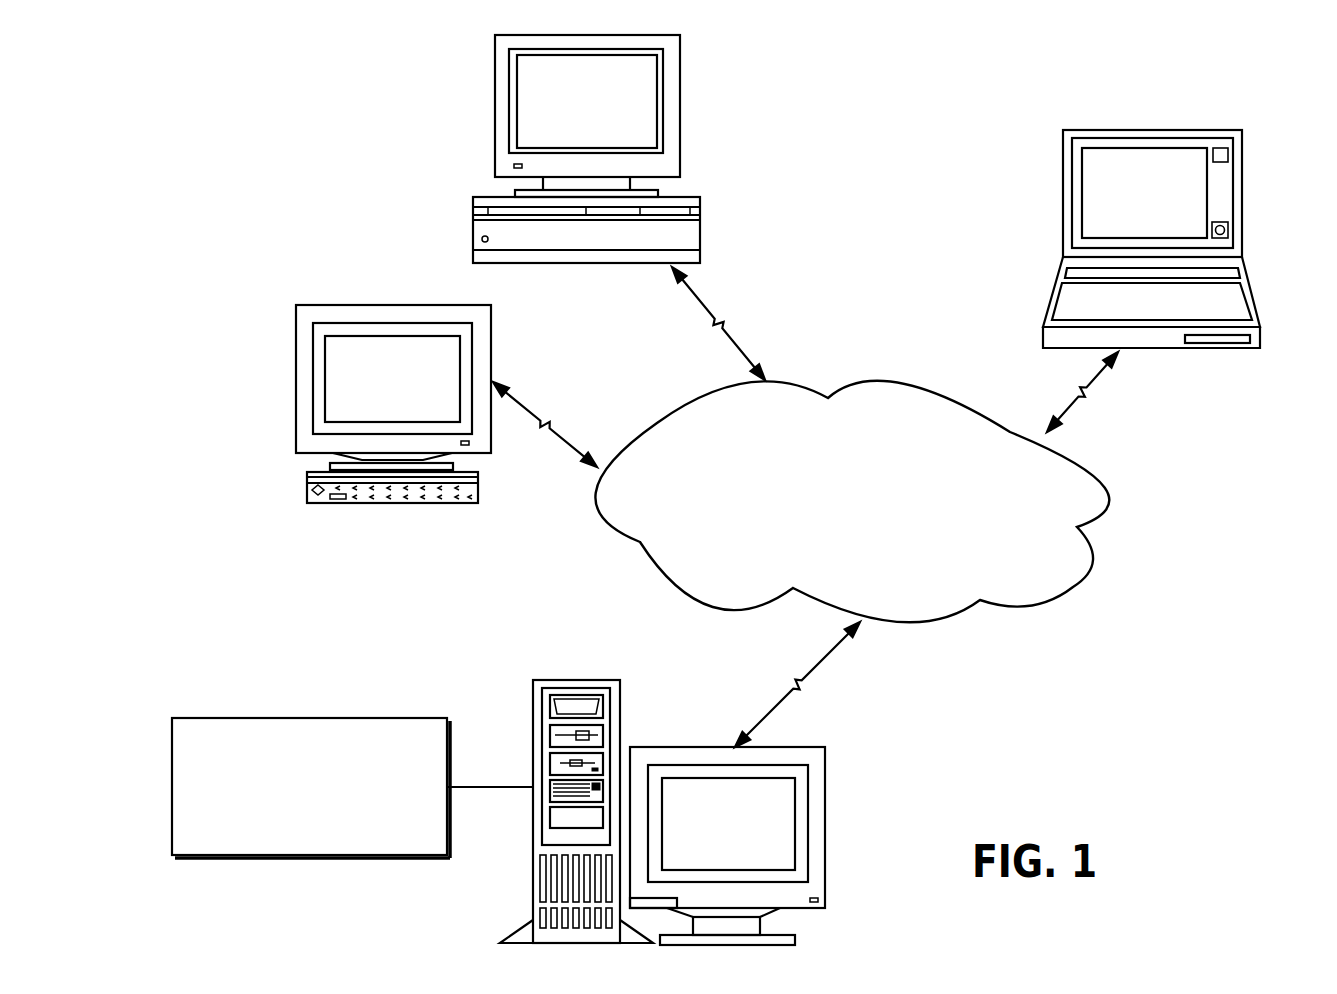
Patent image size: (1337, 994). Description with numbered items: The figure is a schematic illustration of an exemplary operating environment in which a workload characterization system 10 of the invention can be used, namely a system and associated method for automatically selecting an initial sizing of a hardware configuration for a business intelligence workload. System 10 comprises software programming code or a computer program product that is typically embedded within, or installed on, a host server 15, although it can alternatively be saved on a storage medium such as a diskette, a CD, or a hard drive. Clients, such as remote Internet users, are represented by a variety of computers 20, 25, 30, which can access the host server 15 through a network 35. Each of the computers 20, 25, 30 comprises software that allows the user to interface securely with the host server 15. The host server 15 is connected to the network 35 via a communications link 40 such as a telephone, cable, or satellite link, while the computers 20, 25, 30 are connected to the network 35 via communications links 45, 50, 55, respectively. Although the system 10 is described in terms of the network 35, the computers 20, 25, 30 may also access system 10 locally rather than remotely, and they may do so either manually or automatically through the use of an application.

The workload characterization system 10 is at (170, 761).
The host server 15 is at (533, 728).
The computer 20 is at (492, 363).
The computer 25 is at (680, 90).
The computer 30 is at (1253, 293).
The network 35 is at (1075, 585).
The communications link 40 is at (788, 680).
The communications link 45 is at (548, 418).
The communications link 50 is at (722, 330).
The communications link 55 is at (1073, 403).